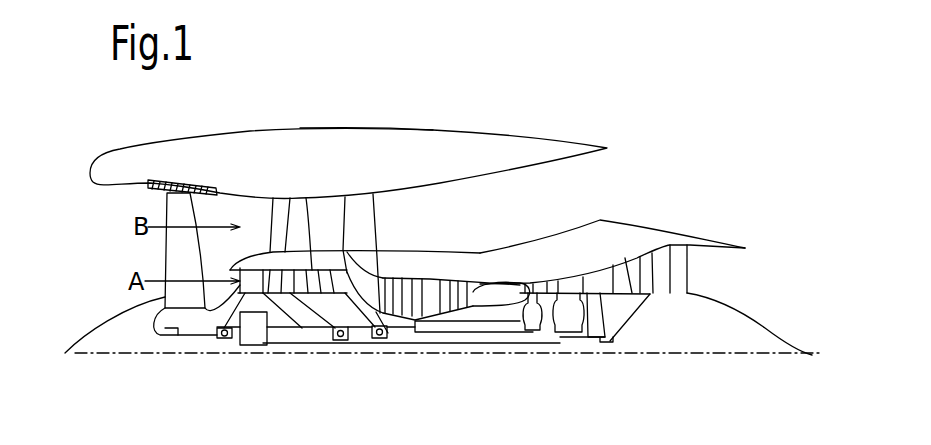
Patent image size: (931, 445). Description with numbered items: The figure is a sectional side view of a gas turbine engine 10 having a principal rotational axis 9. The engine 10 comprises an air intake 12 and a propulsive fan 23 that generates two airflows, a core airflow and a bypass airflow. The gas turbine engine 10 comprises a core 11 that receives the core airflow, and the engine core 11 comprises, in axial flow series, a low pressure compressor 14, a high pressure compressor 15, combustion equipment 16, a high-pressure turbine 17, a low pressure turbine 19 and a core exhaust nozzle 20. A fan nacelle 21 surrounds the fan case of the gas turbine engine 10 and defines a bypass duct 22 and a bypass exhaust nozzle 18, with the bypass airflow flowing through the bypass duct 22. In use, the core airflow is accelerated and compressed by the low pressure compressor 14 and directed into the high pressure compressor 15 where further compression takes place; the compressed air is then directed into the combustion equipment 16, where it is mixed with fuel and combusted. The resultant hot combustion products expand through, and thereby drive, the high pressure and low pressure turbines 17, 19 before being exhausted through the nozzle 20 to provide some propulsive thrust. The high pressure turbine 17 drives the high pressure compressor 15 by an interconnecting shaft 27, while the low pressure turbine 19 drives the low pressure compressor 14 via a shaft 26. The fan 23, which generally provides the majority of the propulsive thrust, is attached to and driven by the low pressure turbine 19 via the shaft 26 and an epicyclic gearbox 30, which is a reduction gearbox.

The principal rotational axis 9 is at (657, 353).
The gas turbine engine 10 is at (152, 145).
The core 11 is at (481, 278).
The air intake 12 is at (104, 220).
The low pressure compressor 14 is at (306, 198).
The high pressure compressor 15 is at (428, 278).
The combustion equipment 16 is at (496, 300).
The high-pressure turbine 17 is at (547, 288).
The bypass exhaust nozzle 18 is at (664, 186).
The low pressure turbine 19 is at (662, 263).
The core exhaust nozzle 20 is at (718, 280).
The fan nacelle 21 is at (368, 145).
The bypass duct 22 is at (586, 200).
The propulsive fan 23 is at (170, 254).
The shaft 26 is at (430, 343).
The interconnecting shaft 27 is at (460, 334).
The epicyclic gearbox 30 is at (250, 330).